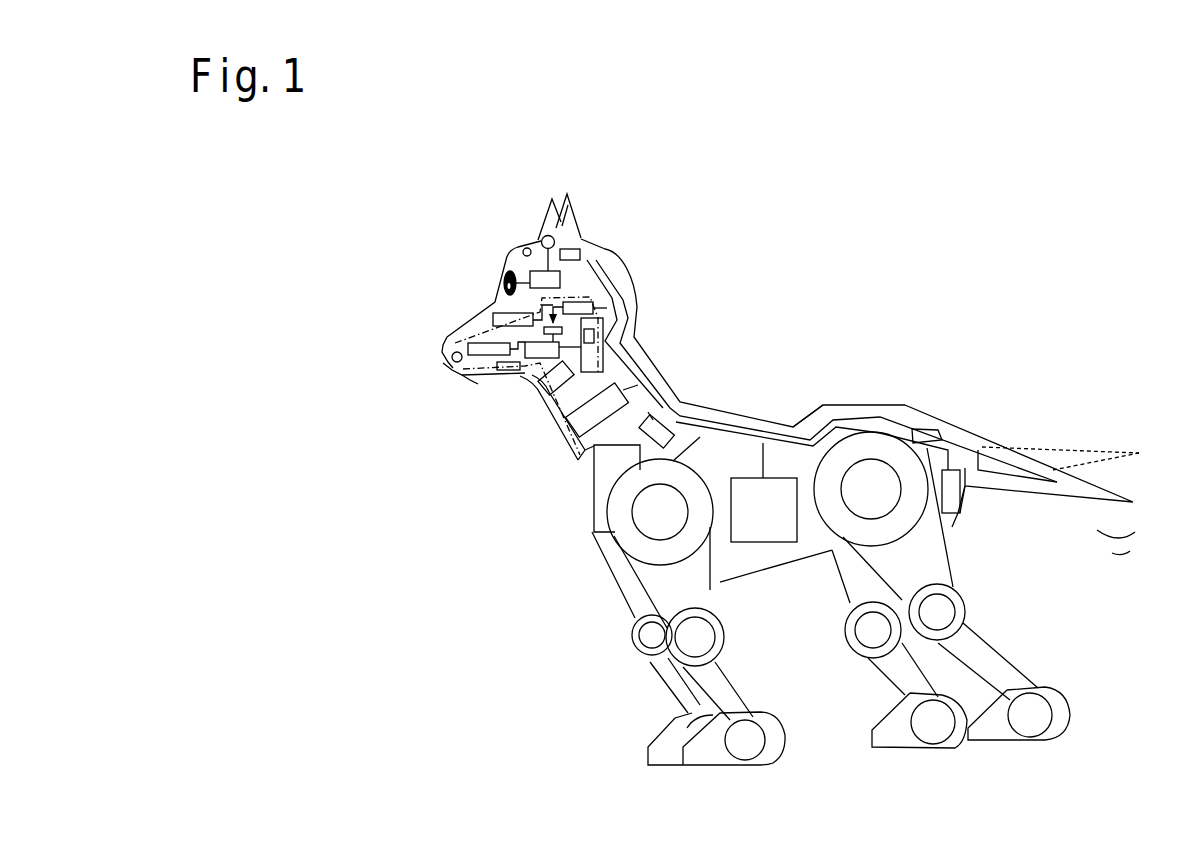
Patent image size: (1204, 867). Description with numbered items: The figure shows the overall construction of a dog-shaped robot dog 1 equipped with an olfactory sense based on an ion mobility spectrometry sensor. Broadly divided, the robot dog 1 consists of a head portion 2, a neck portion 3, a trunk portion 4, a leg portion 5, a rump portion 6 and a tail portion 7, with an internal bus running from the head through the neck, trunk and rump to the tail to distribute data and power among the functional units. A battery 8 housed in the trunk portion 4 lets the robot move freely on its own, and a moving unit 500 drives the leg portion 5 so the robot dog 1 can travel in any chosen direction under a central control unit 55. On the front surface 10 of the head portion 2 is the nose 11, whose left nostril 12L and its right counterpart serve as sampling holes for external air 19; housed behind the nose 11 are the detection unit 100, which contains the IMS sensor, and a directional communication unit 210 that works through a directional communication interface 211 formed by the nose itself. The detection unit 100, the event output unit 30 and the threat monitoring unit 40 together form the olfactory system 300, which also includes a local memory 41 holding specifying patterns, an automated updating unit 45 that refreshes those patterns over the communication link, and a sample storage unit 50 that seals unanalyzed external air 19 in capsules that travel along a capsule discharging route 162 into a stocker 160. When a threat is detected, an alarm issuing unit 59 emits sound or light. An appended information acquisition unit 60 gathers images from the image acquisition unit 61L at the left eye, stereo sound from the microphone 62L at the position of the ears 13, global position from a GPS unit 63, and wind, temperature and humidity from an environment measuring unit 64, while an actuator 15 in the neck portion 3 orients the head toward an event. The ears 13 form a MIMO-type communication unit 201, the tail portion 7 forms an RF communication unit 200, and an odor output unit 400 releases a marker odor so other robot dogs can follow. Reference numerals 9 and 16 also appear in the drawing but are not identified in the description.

The robot dog 1 is at (715, 307).
The head portion 2 is at (643, 262).
The neck portion 3 is at (661, 352).
The trunk portion 4 is at (760, 396).
The leg portion 5 is at (632, 659).
The rump portion 6 is at (976, 531).
The tail portion 7 is at (1051, 508).
The battery 8 is at (755, 508).
The back sensor 9 is at (694, 417).
The front surface 10 is at (453, 292).
The nose 11 is at (433, 358).
The left nostril 12L is at (441, 367).
The ears 13 is at (542, 236).
The actuator 15 is at (592, 462).
The nose 16 is at (441, 343).
The external air 19 is at (424, 373).
The event output unit 30 is at (540, 360).
The threat monitoring unit 40 is at (556, 335).
The local memory 41 is at (636, 290).
The automated updating unit 45 is at (604, 343).
The sample storage unit 50 is at (500, 367).
The central control unit 55 is at (596, 305).
The alarm issuing unit 59 is at (567, 396).
The appended information acquisition unit 60 is at (530, 274).
The image acquisition unit 61L is at (504, 280).
The microphone 62L is at (539, 243).
The GPS unit 63 is at (658, 418).
The environment measuring unit 64 is at (525, 249).
The detection unit 100 is at (478, 372).
The stocker 160 is at (595, 496).
The capsule discharging route 162 is at (590, 451).
The RF communication unit 200 is at (993, 462).
The MIMO-type communication unit 201 is at (579, 252).
The directional communication unit 210 is at (494, 318).
The directional communication interface 211 is at (438, 350).
The olfactory system 300 is at (465, 368).
The odor output unit 400 is at (953, 482).
The moving unit 500 is at (620, 552).